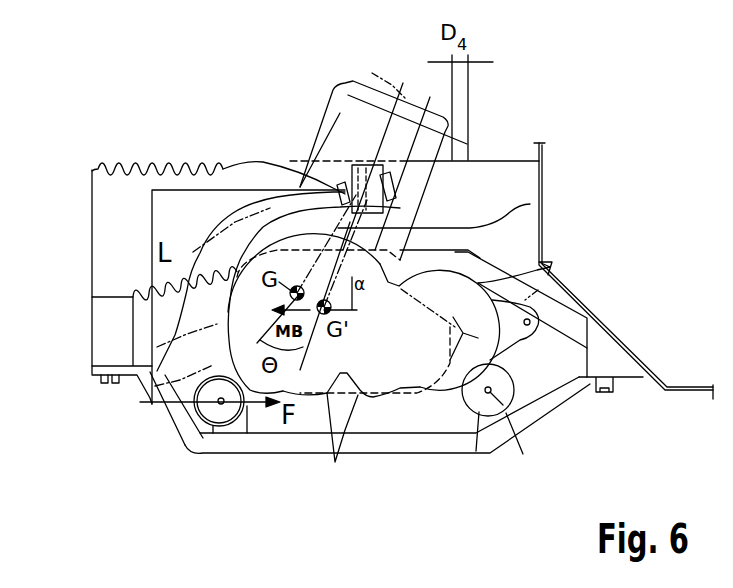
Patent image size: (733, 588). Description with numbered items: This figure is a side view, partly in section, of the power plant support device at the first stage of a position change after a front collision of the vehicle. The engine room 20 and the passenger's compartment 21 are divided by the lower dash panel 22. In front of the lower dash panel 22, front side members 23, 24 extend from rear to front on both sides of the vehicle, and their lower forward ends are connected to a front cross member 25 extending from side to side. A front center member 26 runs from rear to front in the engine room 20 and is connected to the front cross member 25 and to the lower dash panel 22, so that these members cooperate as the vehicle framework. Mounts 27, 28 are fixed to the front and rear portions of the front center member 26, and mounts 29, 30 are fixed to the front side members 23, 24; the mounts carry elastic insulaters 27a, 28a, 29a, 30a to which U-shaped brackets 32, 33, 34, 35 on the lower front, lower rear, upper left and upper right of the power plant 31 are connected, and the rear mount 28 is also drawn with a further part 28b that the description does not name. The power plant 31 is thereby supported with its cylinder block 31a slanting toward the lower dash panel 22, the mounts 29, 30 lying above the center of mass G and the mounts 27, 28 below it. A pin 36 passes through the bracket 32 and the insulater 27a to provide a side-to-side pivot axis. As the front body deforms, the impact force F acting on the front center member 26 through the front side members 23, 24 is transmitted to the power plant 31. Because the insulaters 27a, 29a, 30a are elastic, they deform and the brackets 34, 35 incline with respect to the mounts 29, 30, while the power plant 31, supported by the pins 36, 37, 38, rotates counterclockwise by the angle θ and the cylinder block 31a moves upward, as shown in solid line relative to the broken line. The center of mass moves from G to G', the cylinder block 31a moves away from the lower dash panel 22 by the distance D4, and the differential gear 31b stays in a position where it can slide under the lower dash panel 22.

The engine room 20 is at (141, 116).
The passenger's compartment 21 is at (677, 308).
The lower dash panel 22 is at (545, 160).
The front side member 23 is at (135, 271).
The front side member 24 is at (107, 214).
The front cross member 25 is at (108, 324).
The front center member 26 is at (418, 447).
The mount 27 is at (203, 440).
The elastic insulater 27a is at (168, 420).
The mount 28 is at (516, 392).
The elastic insulater 28a is at (493, 437).
The roller axle 28b is at (520, 451).
The mount 29 is at (367, 162).
The mount 30 is at (367, 162).
The elastic insulater 29a is at (350, 160).
The elastic insulater 30a is at (350, 160).
The power plant 31 is at (335, 462).
The cylinder block 31a is at (350, 82).
The differential gear 31b is at (552, 266).
The U-shaped bracket 32 is at (238, 421).
The U-shaped bracket 33 is at (520, 335).
The U-shaped bracket 34 is at (530, 204).
The U-shaped bracket 35 is at (530, 204).
The pin 36 is at (222, 412).
The pin 37 is at (338, 192).
The pin 38 is at (338, 192).